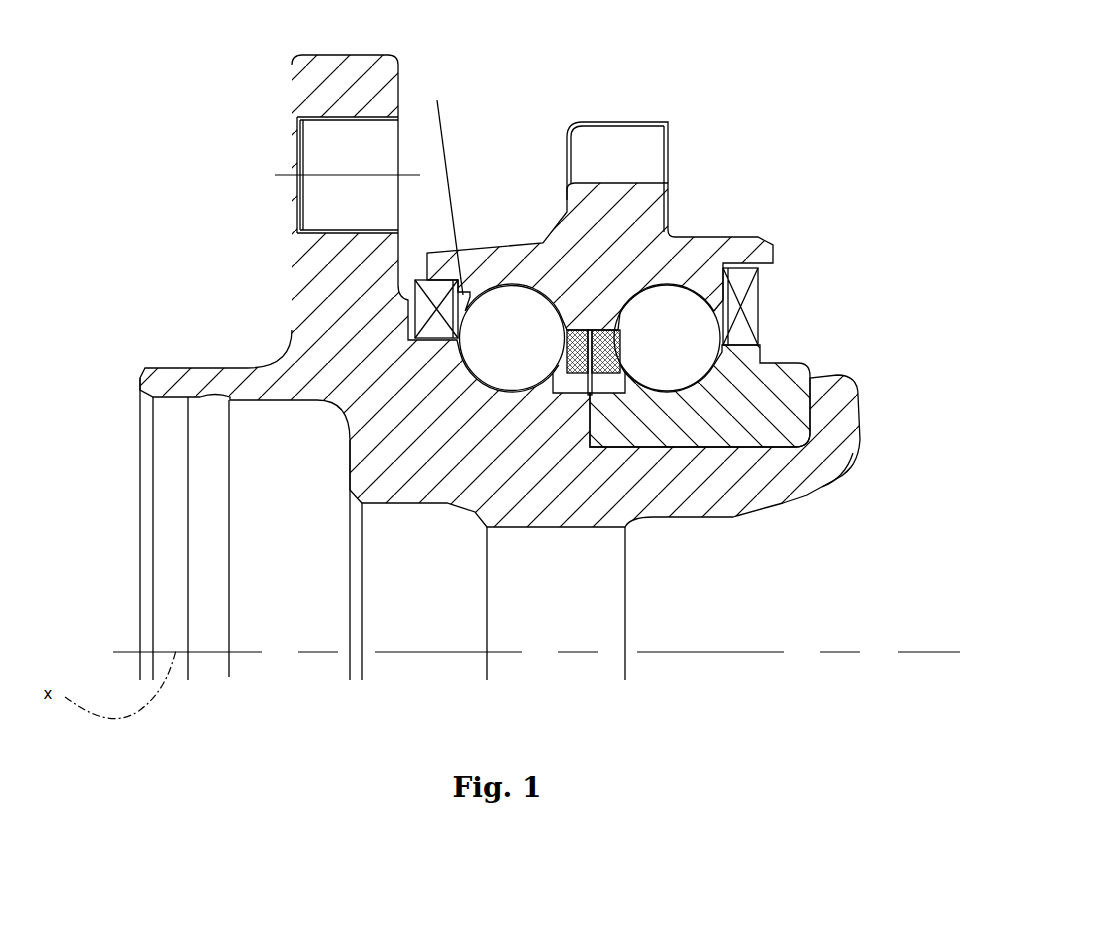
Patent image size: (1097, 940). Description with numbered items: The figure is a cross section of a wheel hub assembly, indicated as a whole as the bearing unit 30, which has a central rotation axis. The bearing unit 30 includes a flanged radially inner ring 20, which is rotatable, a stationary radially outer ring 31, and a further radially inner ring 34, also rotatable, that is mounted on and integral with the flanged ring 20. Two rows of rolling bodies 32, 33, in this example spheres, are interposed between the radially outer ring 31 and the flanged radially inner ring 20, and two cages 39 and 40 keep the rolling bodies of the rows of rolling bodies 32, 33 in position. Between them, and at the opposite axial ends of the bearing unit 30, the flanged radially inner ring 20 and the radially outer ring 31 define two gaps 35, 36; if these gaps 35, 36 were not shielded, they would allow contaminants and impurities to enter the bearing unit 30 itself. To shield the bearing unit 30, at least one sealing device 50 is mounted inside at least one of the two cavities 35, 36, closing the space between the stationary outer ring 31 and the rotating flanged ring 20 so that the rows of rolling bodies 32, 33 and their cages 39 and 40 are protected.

The flanged radially inner ring 20 is at (318, 435).
The bearing unit 30 is at (200, 80).
The radially outer ring 31 is at (628, 205).
The row of rolling bodies 32 is at (508, 345).
The row of rolling bodies 33 is at (667, 340).
The further radially inner ring 34 is at (731, 440).
The gap 35 is at (441, 281).
The gap 36 is at (743, 268).
The cage 39 is at (568, 330).
The cage 40 is at (598, 330).
The sealing device 50 is at (433, 322).